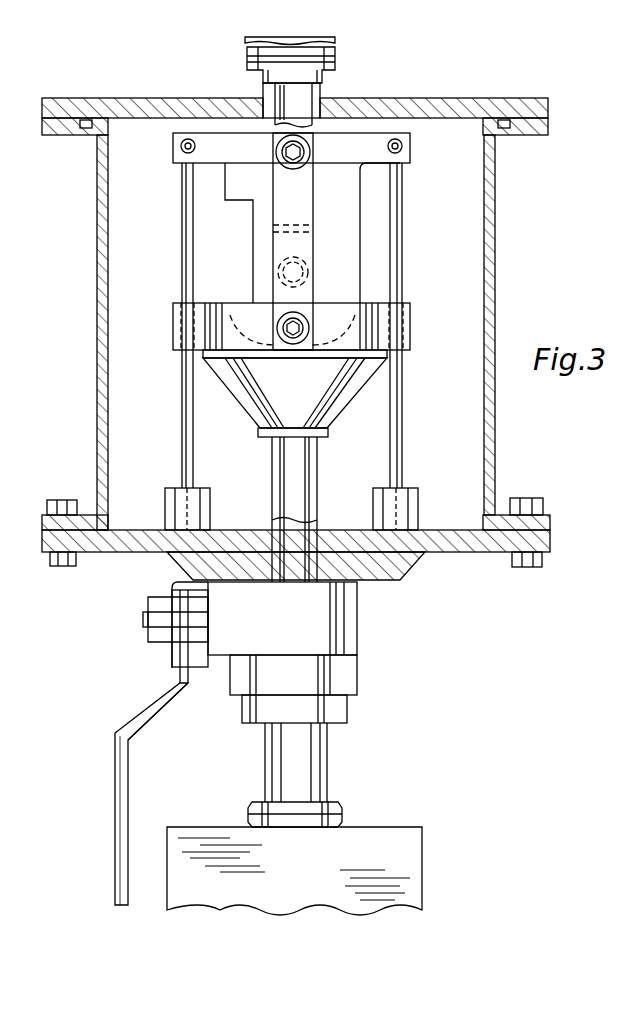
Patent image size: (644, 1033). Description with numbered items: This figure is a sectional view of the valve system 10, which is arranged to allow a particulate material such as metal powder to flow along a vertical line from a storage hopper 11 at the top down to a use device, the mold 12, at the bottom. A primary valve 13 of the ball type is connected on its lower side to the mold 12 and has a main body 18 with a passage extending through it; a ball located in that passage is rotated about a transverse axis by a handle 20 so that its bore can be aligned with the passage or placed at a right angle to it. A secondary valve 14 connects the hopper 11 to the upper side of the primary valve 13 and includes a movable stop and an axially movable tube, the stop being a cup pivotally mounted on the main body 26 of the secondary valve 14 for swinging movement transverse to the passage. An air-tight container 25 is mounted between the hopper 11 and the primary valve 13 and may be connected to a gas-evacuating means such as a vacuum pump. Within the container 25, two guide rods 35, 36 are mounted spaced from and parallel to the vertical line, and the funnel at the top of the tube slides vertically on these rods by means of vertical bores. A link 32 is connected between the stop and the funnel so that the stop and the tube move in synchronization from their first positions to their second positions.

The valve system 10 is at (470, 98).
The hopper 11 is at (330, 40).
The mold 12 is at (422, 873).
The primary valve 13 is at (357, 635).
The secondary valve 14 is at (360, 228).
The main body 18 is at (345, 675).
The handle 20 is at (128, 787).
The air-tight container 25 is at (496, 275).
The main body 26 is at (268, 230).
The link 32 is at (289, 200).
The guide rod 35 is at (182, 429).
The guide rod 36 is at (402, 426).